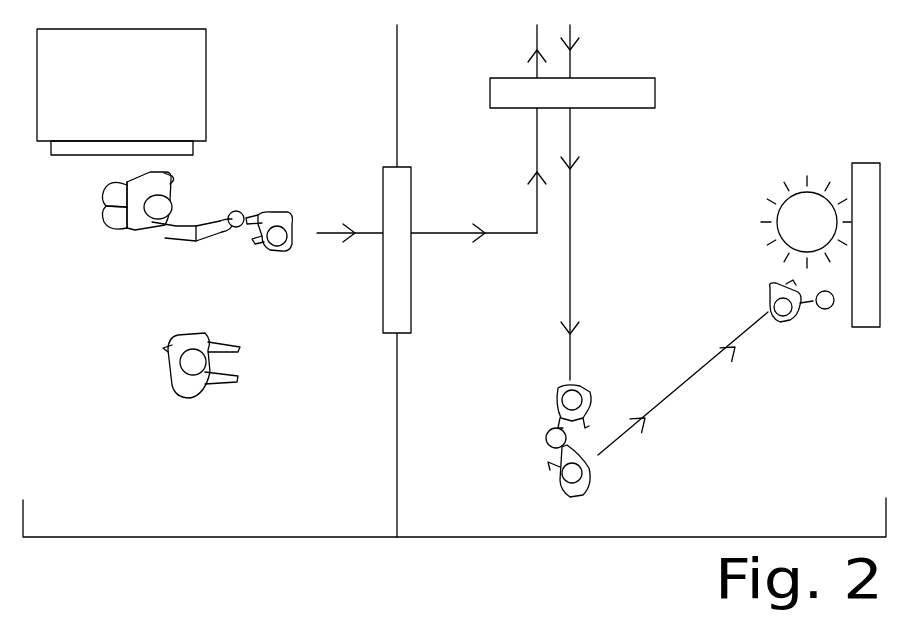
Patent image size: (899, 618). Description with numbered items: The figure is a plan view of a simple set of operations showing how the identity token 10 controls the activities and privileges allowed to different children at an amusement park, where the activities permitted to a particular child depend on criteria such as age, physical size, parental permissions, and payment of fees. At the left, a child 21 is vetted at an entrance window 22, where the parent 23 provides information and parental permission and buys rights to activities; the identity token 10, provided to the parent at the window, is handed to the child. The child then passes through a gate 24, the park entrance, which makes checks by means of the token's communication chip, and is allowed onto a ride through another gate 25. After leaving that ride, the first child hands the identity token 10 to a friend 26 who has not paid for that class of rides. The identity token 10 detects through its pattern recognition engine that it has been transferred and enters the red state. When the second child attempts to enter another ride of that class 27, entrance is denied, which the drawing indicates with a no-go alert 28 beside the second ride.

The identity token 10 is at (243, 212).
The child 21 is at (272, 248).
The entrance window 22 is at (119, 142).
The parent 23 is at (142, 240).
The gate 24 is at (383, 313).
The another gate 25 is at (512, 108).
The friend 26 is at (562, 488).
The another ride of that class 27 is at (851, 325).
The no go alert 28 is at (778, 238).